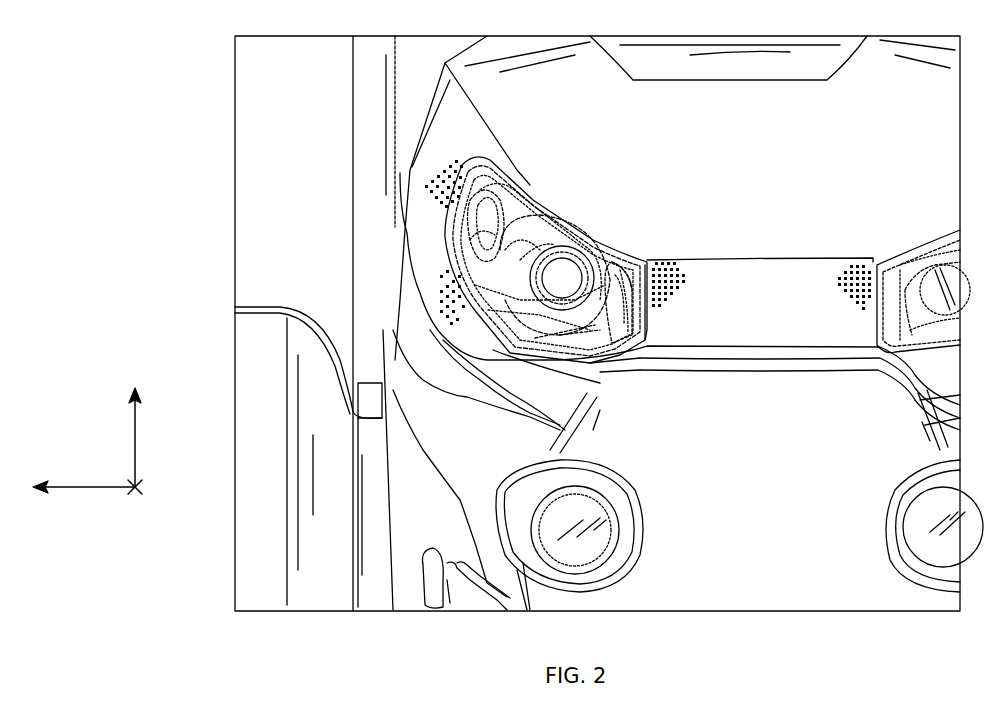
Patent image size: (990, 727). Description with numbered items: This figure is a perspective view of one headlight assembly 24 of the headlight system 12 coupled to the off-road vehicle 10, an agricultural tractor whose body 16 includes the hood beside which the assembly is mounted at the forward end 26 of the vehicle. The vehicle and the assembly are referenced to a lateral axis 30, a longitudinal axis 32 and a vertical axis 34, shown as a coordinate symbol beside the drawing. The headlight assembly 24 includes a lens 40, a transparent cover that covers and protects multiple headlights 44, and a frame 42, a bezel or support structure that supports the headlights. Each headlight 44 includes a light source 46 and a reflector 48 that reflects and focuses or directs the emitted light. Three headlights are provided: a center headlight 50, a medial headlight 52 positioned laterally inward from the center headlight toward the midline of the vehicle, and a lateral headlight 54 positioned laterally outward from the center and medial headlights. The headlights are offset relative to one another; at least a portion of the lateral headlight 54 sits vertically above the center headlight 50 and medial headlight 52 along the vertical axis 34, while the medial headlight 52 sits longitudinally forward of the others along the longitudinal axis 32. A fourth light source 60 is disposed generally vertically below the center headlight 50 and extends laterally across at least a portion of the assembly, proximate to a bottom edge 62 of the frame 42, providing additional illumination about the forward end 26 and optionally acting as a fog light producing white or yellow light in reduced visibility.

The off-road vehicle 10 is at (268, 86).
The headlight system 12 is at (325, 174).
The body 16 is at (452, 140).
The headlight assembly 24 is at (462, 252).
The forward end 26 is at (338, 326).
The lateral axis 30 is at (97, 488).
The longitudinal axis 32 is at (140, 487).
The vertical axis 34 is at (135, 448).
The lens 40 is at (507, 243).
The frame 42 is at (447, 225).
The headlights 44 is at (500, 208).
The light source 46 is at (567, 273).
The reflector 48 is at (648, 336).
The center headlight 50 is at (540, 253).
The medial headlight 52 is at (632, 283).
The lateral headlight 54 is at (487, 247).
The fourth light source 60 is at (567, 293).
The bottom edge 62 is at (513, 352).